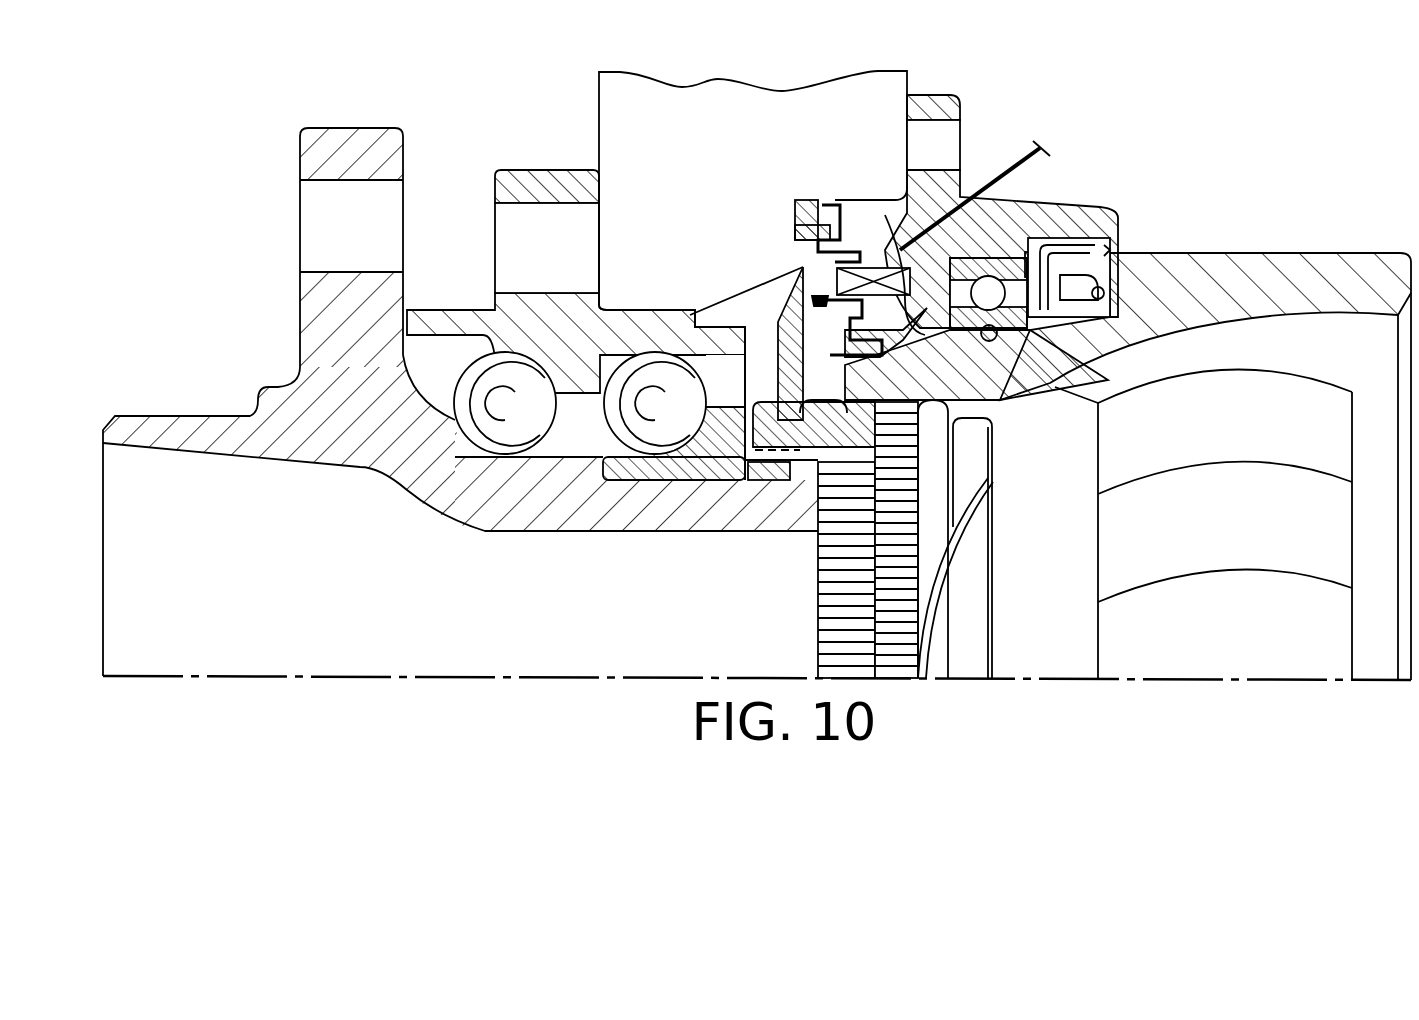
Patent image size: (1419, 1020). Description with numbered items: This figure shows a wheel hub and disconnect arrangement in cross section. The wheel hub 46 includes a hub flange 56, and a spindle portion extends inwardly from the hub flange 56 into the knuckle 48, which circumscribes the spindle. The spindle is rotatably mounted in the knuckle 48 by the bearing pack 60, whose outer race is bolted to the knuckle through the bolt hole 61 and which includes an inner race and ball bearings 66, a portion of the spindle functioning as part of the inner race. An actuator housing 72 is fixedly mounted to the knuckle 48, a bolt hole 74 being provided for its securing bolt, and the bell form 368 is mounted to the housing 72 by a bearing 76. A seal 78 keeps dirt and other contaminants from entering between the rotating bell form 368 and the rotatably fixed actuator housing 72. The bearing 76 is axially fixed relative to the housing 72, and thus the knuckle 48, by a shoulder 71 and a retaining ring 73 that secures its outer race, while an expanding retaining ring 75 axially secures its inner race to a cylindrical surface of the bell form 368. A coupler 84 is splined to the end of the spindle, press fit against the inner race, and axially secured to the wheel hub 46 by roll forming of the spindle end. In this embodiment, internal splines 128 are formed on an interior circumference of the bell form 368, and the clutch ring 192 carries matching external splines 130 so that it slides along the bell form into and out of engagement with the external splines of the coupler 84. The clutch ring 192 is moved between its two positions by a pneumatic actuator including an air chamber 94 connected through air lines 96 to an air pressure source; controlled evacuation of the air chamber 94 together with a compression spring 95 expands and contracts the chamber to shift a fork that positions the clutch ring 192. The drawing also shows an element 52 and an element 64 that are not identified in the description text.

The wheel hub 46 is at (360, 448).
The knuckle 48 is at (627, 113).
The rotor 52 is at (1252, 265).
The hub flange 56 is at (317, 300).
The bearing pack 60 is at (491, 140).
The bolt hole 61 is at (510, 239).
The outer race 64 is at (505, 317).
The ball bearings 66 is at (640, 408).
The shoulder 71 is at (1038, 238).
The actuator housing 72 is at (980, 220).
The retaining ring 73 is at (1045, 230).
The bolt hole 74 is at (947, 140).
The expanding retaining ring 75 is at (1040, 357).
The bearing 76 is at (1027, 318).
The seal 78 is at (1110, 250).
The coupler 84 is at (740, 483).
The air chamber 94 is at (878, 213).
The compression spring 95 is at (806, 268).
The air lines 96 is at (1035, 142).
The internal splines 128 is at (897, 402).
The external splines 130 is at (825, 408).
The clutch ring 192 is at (832, 433).
The bell form 368 is at (1040, 380).